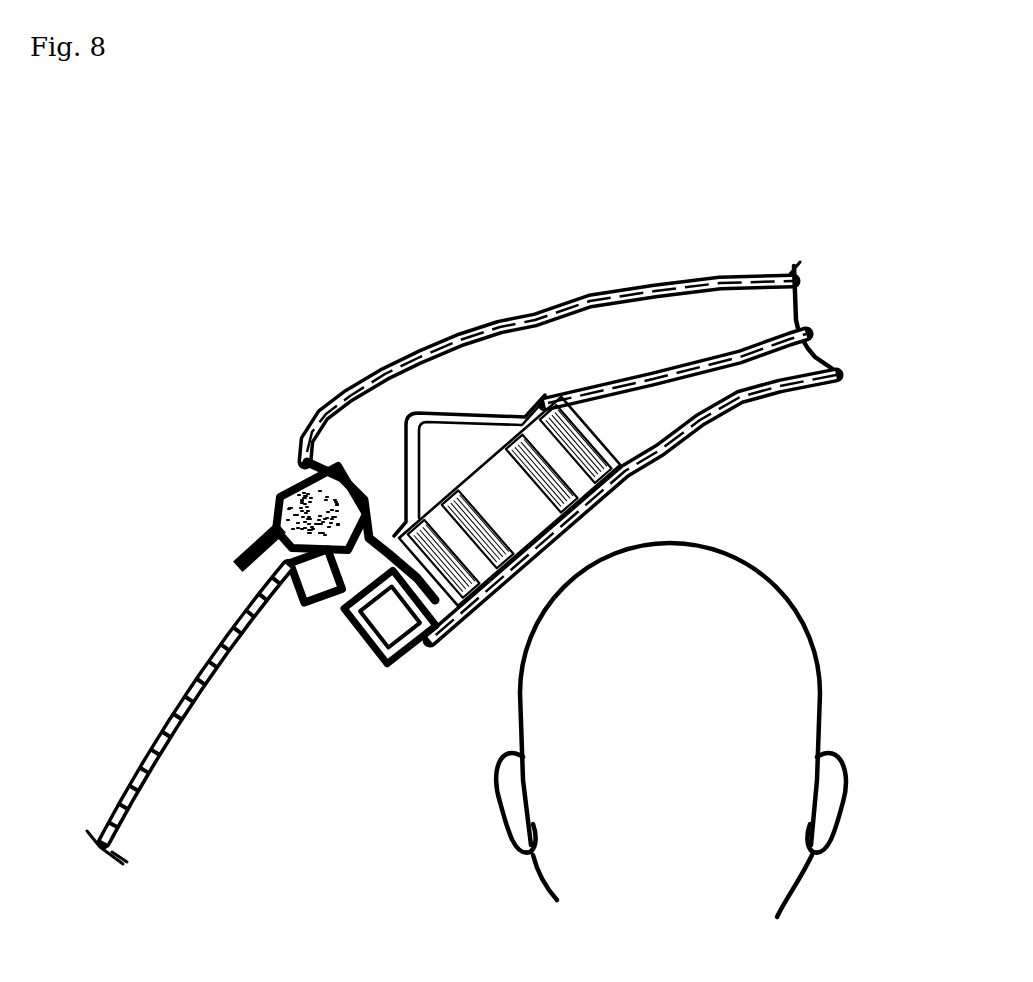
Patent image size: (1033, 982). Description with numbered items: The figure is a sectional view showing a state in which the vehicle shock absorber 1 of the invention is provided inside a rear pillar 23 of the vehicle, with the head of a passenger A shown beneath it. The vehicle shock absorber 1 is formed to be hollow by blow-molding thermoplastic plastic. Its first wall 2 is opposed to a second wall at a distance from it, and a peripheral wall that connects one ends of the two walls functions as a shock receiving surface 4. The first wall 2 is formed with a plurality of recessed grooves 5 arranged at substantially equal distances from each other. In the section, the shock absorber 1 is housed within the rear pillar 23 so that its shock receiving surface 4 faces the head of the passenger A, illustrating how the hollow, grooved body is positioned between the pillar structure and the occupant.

The vehicle shock absorber 1 is at (477, 456).
The first wall 2 is at (587, 500).
The shock receiving surface 4 is at (568, 512).
The recessed grooves 5 is at (583, 440).
The rear pillar 23 is at (728, 412).
The head of a passenger A is at (777, 650).